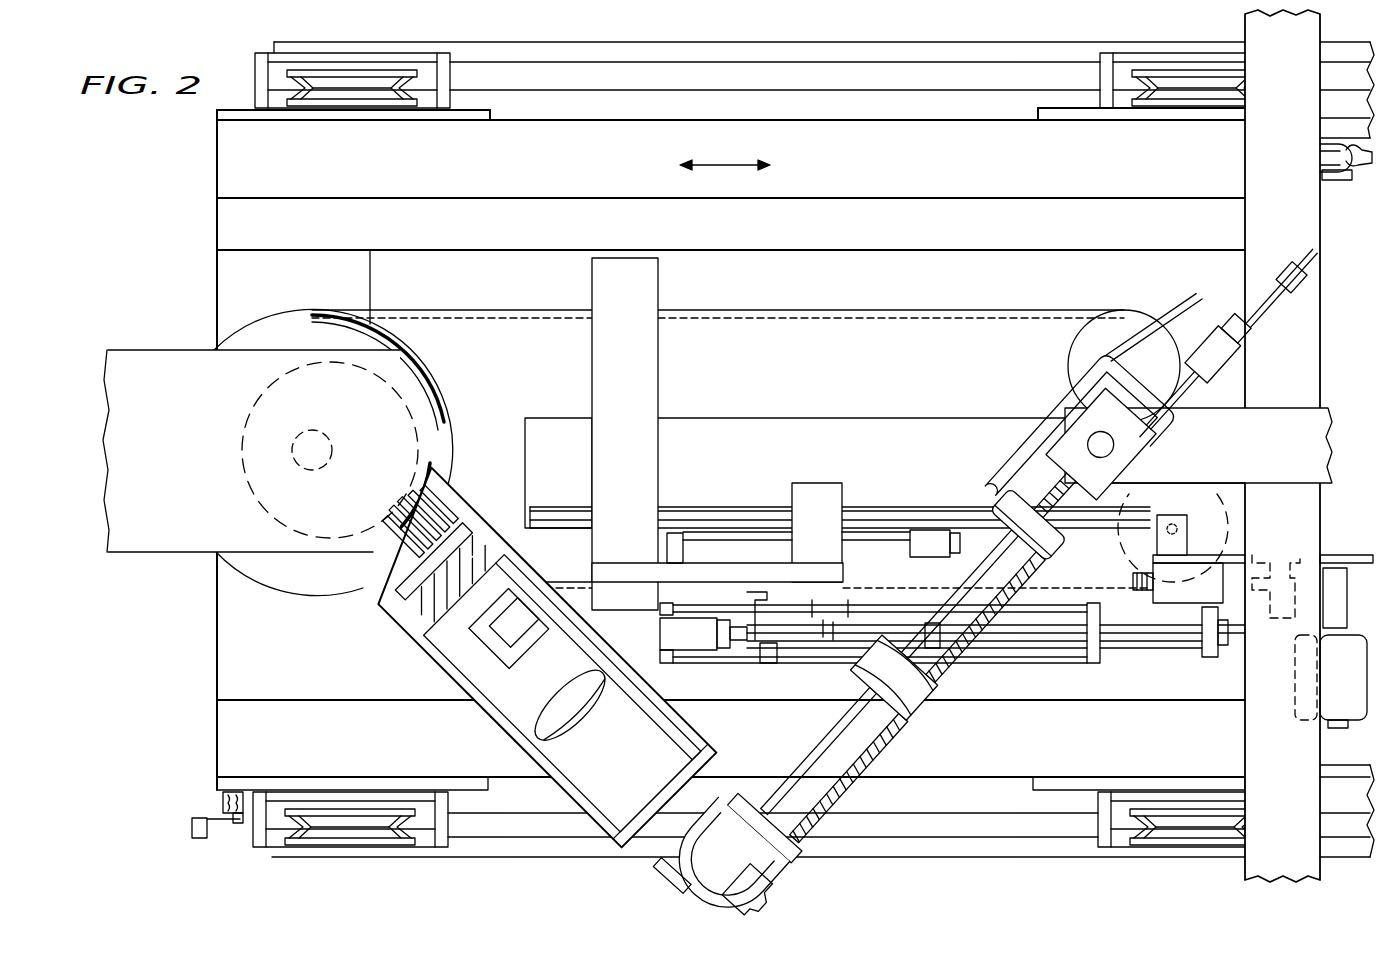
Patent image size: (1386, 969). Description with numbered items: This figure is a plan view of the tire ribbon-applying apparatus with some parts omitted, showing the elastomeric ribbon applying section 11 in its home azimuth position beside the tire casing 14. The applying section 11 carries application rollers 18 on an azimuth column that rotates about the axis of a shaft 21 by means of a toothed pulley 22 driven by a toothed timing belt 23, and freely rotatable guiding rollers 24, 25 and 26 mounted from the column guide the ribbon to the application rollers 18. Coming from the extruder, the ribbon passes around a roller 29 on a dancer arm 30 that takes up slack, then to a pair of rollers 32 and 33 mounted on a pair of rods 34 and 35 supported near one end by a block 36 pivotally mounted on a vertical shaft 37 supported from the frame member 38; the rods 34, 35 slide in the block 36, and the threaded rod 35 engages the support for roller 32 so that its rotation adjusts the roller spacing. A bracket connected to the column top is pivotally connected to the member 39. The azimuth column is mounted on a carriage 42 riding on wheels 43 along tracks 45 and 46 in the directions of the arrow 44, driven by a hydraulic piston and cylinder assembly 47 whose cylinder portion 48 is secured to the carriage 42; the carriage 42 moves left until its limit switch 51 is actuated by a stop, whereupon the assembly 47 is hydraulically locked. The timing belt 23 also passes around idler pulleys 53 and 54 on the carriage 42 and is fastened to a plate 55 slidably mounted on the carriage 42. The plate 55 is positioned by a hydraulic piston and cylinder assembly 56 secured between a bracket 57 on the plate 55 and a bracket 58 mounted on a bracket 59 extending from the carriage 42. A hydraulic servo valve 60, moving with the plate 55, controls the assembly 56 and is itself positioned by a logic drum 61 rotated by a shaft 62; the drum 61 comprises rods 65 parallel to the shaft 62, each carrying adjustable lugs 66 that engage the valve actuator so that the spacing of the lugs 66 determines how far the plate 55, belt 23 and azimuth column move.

The elastomeric ribbon applying section 11 is at (470, 490).
The tire casing 14 is at (175, 355).
The application rollers 18 is at (414, 518).
The shaft 21 is at (332, 449).
The toothed pulley 22 is at (450, 392).
The toothed timing belt 23 is at (470, 311).
The guiding roller 24 is at (485, 545).
The guiding roller 25 is at (604, 730).
The guiding roller 26 is at (696, 881).
The roller 29 is at (992, 505).
The dancer arm 30 is at (1020, 455).
The roller 32 is at (920, 708).
The roller 33 is at (776, 881).
The rod 34 is at (800, 760).
The threaded rod 35 is at (866, 752).
The block 36 is at (1172, 463).
The vertical shaft 37 is at (1100, 442).
The frame member 38 is at (1322, 418).
The member 39 is at (804, 859).
The carriage 42 is at (212, 740).
The wheels 43 is at (398, 70).
The arrow 44 is at (714, 166).
The track 45 is at (805, 75).
The track 46 is at (1037, 824).
The hydraulic piston and cylinder assembly 47 is at (1318, 186).
The cylinder portion 48 is at (1330, 146).
The limit switch 51 is at (218, 799).
The idler pulley 53 is at (1070, 358).
The idler pulley 54 is at (1232, 525).
The plate 55 is at (830, 577).
The hydraulic piston and cylinder assembly 56 is at (1088, 571).
The bracket 57 is at (680, 547).
The bracket 58 is at (1184, 552).
The bracket 59 is at (1350, 560).
The hydraulic servo valve 60 is at (706, 648).
The logic drum 61 is at (972, 654).
The shaft 62 is at (1088, 638).
The rods 65 is at (840, 648).
The lugs 66 is at (770, 656).